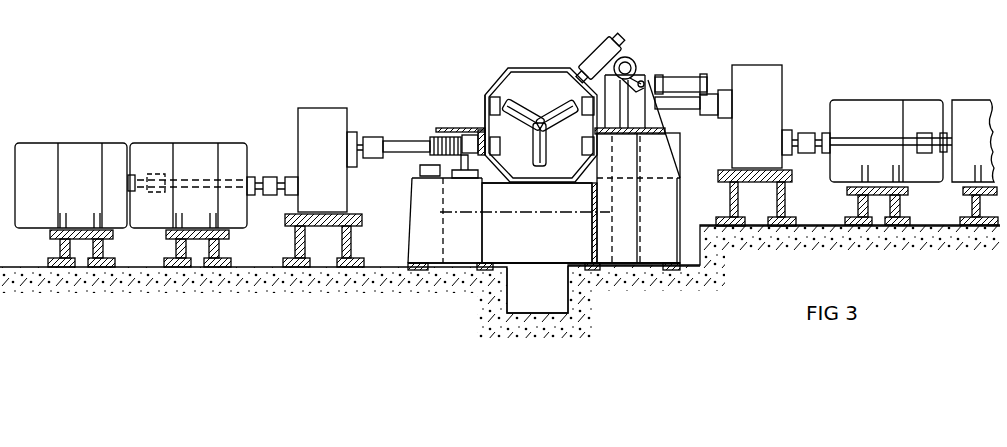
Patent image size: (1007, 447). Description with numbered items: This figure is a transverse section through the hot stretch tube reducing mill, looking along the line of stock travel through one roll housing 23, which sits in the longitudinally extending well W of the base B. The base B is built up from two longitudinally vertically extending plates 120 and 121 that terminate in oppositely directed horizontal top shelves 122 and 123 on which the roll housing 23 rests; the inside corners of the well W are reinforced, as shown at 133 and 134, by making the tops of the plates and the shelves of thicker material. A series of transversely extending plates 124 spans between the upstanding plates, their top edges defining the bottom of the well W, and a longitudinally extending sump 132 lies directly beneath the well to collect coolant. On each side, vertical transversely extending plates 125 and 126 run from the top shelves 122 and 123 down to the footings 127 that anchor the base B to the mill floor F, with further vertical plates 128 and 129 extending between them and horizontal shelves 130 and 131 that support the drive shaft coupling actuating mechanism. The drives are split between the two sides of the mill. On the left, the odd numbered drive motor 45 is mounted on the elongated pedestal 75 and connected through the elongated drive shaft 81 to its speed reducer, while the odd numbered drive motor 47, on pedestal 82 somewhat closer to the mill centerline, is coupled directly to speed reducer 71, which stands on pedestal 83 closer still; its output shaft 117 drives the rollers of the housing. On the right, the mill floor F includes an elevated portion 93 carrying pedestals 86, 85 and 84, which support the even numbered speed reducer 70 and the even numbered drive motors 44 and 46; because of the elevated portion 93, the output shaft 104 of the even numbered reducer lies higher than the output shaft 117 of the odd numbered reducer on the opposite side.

The roll housing 23 is at (532, 76).
The drive motor 44 is at (891, 141).
The drive motor 45 is at (71, 185).
The drive motor 46 is at (973, 141).
The drive motor 47 is at (187, 185).
The speed reducer 70 is at (781, 116).
The speed reducer 71 is at (315, 160).
The elongated pedestal 75 is at (101, 267).
The elongated drive shaft 81 is at (207, 182).
The elongated pedestal 82 is at (180, 268).
The pedestal 83 is at (303, 267).
The pedestal 84 is at (965, 226).
The pedestal 85 is at (880, 226).
The pedestal 86 is at (738, 226).
The elevated portion 93 is at (811, 226).
The output shaft 104 is at (679, 109).
The output shaft 117 is at (402, 141).
The longitudinally vertically extending plate 120 is at (486, 251).
The longitudinally vertically extending plate 121 is at (592, 242).
The top shelf 122 is at (470, 130).
The top shelf 123 is at (648, 136).
The transversely extending plate 124 is at (540, 260).
The vertical transversely extending plate 125 is at (435, 270).
The vertical transversely extending plate 126 is at (616, 268).
The footing 127 is at (478, 271).
The vertical extending plate 128 is at (443, 232).
The vertical extending plate 129 is at (638, 198).
The horizontal shelf 130 is at (444, 209).
The horizontal shelf 131 is at (668, 180).
The sump 132 is at (569, 313).
The reinforced inside corner 133 is at (480, 122).
The reinforced inside corner 134 is at (610, 136).
The mill floor F is at (380, 270).
The well W is at (586, 183).
The base B is at (663, 272).